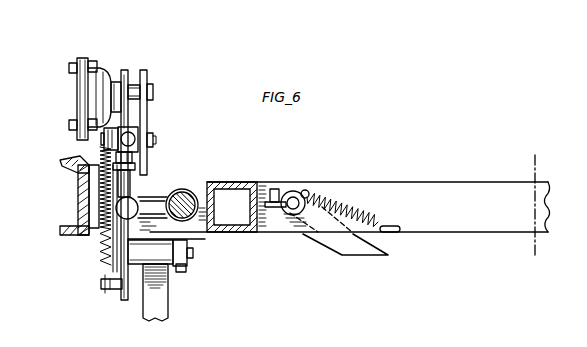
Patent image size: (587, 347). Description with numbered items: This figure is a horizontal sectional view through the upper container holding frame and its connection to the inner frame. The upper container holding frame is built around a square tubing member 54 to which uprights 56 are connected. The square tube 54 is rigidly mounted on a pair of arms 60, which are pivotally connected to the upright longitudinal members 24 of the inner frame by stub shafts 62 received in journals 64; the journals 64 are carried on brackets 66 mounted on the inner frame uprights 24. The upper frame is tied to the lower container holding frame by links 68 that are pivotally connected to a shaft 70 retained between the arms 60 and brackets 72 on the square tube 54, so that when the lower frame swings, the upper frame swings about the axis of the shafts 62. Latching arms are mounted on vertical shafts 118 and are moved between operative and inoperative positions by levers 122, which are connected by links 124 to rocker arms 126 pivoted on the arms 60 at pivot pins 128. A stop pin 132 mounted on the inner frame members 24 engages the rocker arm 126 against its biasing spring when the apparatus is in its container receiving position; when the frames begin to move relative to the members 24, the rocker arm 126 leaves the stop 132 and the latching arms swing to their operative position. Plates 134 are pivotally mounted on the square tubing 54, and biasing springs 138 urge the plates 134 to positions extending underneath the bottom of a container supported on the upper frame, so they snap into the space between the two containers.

The longitudinal members 24 is at (78, 183).
The square tubing member 54 is at (440, 183).
The uprights 56 is at (236, 184).
The arms 60 is at (126, 72).
The stub shafts 62 is at (154, 96).
The journals 64 is at (112, 76).
The brackets 66 is at (78, 106).
The links 68 is at (156, 300).
The shaft 70 is at (194, 252).
The brackets 72 is at (187, 268).
The vertical shafts 118 is at (188, 192).
The levers 122 is at (152, 198).
The links 124 is at (152, 140).
The rocker arms 126 is at (101, 152).
The pivot pins 128 is at (158, 140).
The stop pin 132 is at (93, 229).
The plates 134 is at (352, 252).
The biasing springs 138 is at (356, 220).